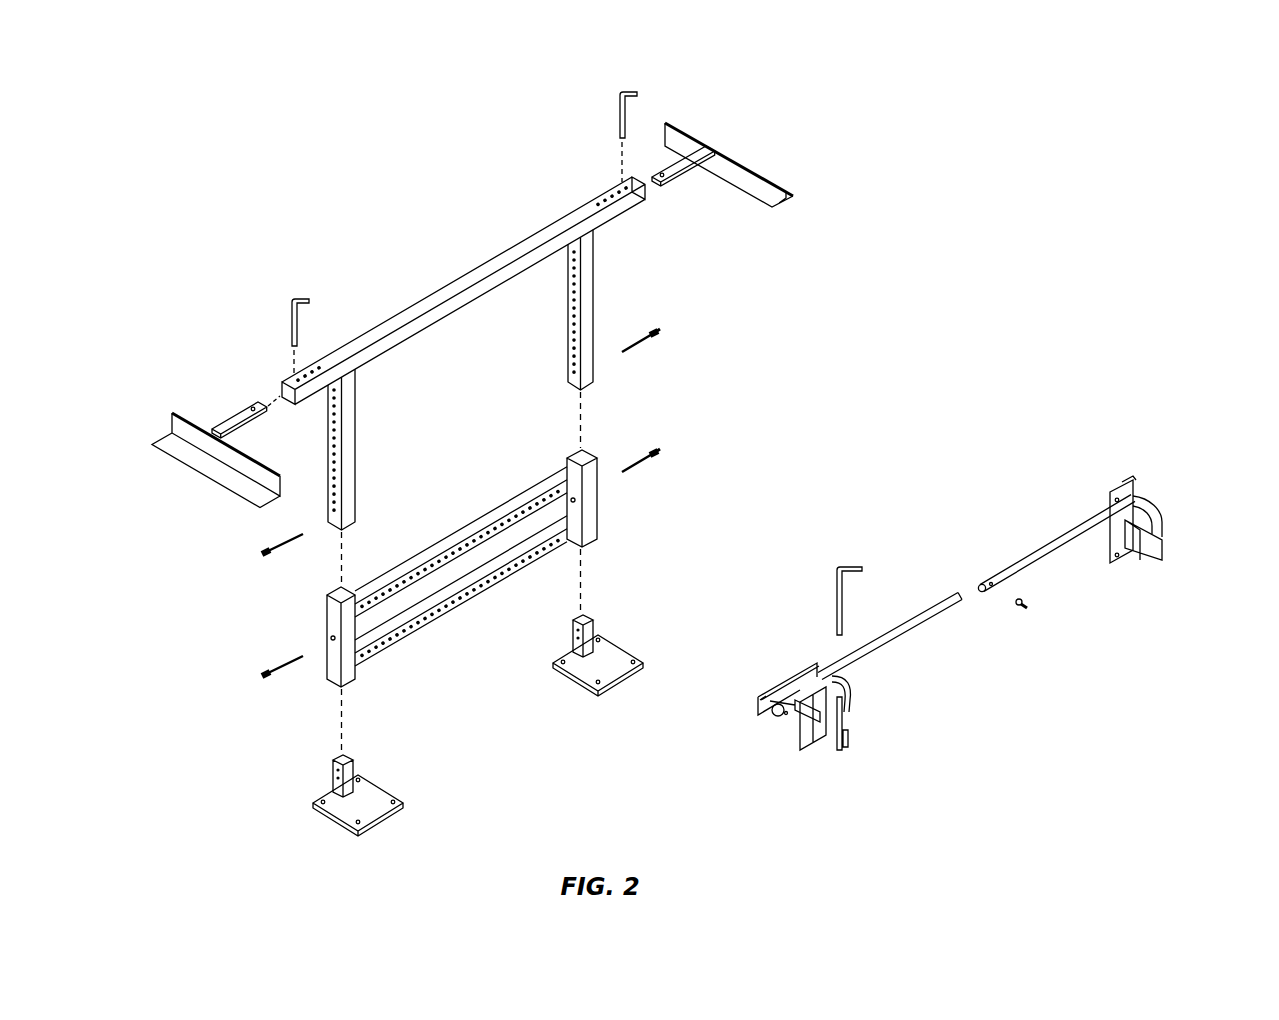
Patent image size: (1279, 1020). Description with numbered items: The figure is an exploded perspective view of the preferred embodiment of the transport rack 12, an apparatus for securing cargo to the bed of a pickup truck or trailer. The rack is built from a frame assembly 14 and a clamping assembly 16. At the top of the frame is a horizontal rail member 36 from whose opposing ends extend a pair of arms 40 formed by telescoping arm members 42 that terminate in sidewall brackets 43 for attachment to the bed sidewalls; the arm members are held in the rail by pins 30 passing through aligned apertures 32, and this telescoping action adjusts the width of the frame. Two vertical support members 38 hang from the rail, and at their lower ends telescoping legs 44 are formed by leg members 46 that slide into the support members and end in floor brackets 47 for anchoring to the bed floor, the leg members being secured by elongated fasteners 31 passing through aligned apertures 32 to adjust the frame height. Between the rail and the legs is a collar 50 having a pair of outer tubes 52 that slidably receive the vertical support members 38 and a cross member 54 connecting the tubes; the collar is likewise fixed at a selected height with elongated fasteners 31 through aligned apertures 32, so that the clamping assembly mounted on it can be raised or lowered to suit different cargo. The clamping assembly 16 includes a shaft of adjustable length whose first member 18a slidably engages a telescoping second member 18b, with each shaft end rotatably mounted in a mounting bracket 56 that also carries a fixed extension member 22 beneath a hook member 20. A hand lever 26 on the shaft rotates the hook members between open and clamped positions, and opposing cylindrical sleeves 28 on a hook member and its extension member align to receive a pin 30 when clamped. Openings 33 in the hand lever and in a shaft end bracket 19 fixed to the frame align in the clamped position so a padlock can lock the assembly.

The transport rack 12 is at (1046, 230).
The frame assembly 14 is at (688, 367).
The clamping assembly 16 is at (955, 472).
The first member 18a is at (950, 595).
The second member 18b is at (1055, 540).
The shaft end bracket 19 is at (770, 695).
The hook member 20 is at (843, 685).
The extension member 22 is at (820, 740).
The hand lever 26 is at (798, 727).
The cylindrical sleeve 28 is at (847, 712).
The pin 30 is at (294, 292).
The elongated fastener 31 is at (662, 330).
The aperture 32 is at (602, 190).
The opening 33 is at (778, 718).
The rail member 36 is at (470, 278).
The vertical support member 38 is at (356, 450).
The arm 40 is at (165, 400).
The telescoping arm member 42 is at (233, 422).
The sidewall bracket 43 is at (205, 490).
The telescoping leg 44 is at (463, 699).
The leg member 46 is at (333, 775).
The floor bracket 47 is at (380, 800).
The collar 50 is at (325, 680).
The outer tube 52 is at (330, 613).
The cross member 54 is at (510, 498).
The mounting bracket 56 is at (795, 680).